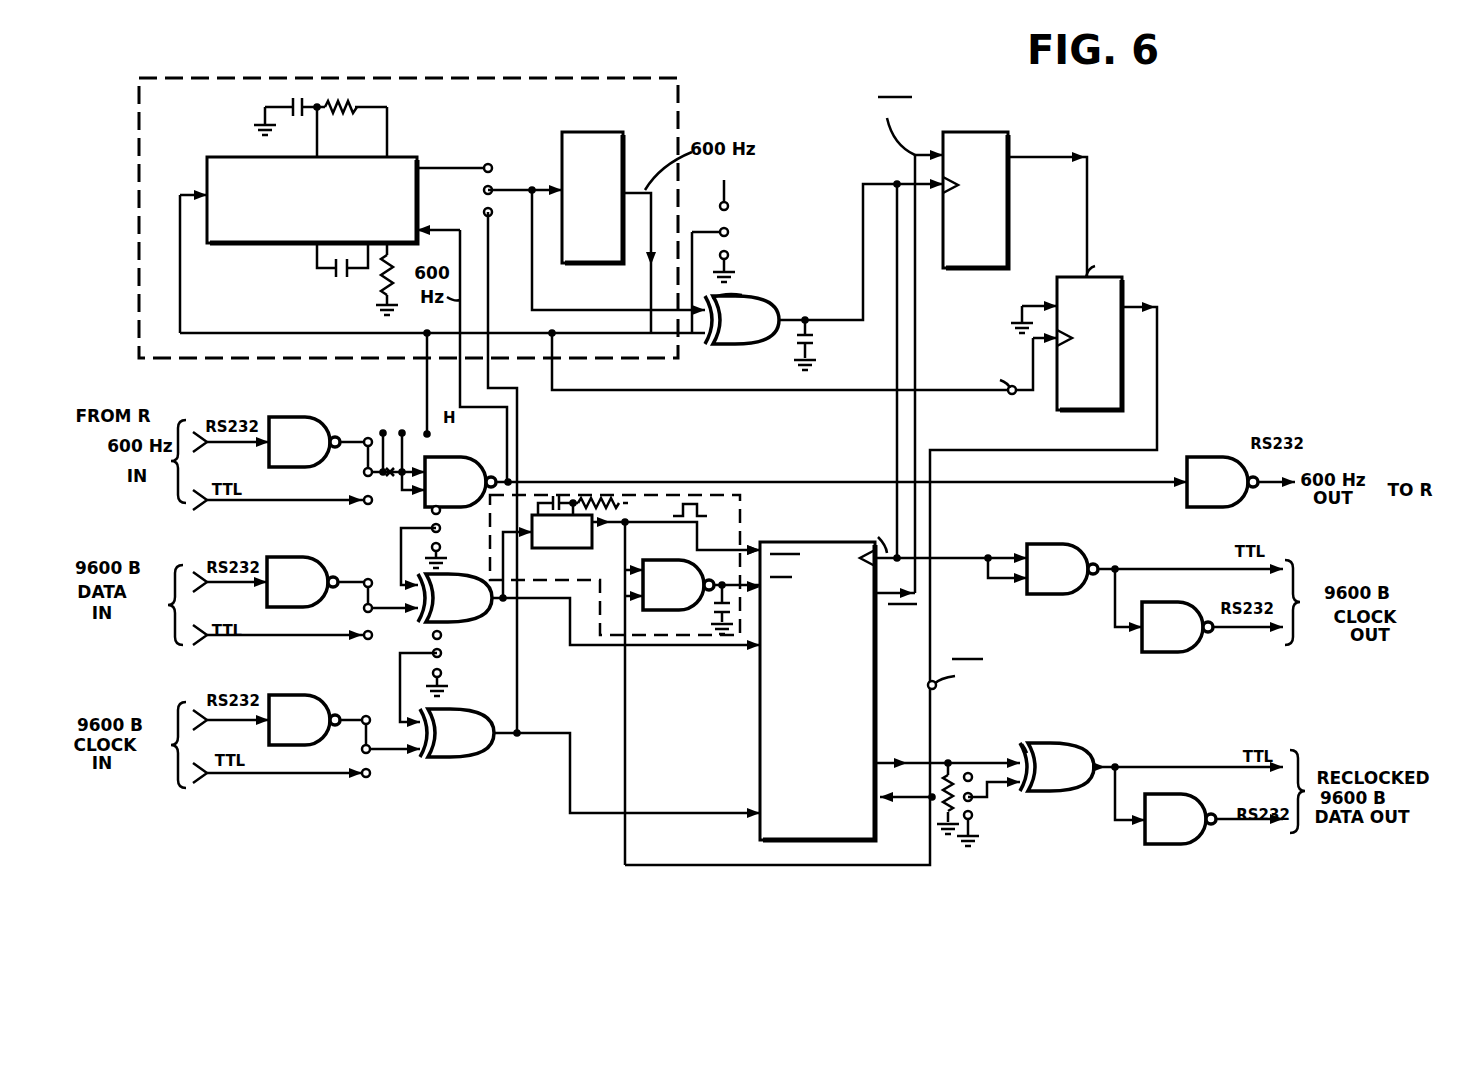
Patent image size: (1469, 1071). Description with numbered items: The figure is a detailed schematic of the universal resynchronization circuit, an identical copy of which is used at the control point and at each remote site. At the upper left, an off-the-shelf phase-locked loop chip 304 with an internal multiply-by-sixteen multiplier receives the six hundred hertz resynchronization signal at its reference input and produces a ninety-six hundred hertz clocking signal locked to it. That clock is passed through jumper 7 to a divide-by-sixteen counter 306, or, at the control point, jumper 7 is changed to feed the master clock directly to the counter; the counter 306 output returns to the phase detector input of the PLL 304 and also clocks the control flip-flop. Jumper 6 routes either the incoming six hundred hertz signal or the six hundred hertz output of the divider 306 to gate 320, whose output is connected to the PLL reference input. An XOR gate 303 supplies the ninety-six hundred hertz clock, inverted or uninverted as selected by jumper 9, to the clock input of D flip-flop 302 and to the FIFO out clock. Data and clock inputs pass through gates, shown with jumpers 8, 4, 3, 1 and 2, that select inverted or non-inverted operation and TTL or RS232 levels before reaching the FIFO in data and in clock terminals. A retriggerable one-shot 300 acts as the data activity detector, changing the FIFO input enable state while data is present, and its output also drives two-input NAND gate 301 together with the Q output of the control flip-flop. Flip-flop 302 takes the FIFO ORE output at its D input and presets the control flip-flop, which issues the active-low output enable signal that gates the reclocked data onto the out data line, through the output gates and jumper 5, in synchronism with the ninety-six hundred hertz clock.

The phase-locked loop integrated circuit 304 is at (403, 157).
The divide by 16 counter 306 is at (562, 133).
The jumper 7 is at (486, 182).
The jumper 9 is at (729, 222).
The XOR gate 303 is at (781, 319).
The D flip-flop 302 is at (967, 132).
The test point 8 is at (309, 441).
The jumper 6 is at (408, 450).
The gate 320 is at (806, 469).
The switch 1 is at (433, 543).
The test point 4 is at (378, 582).
The switch 2 is at (433, 676).
The test point 3 is at (380, 728).
The one-shot 300 is at (582, 523).
The two-input NAND gate 301 is at (657, 610).
The switch 5 is at (988, 805).